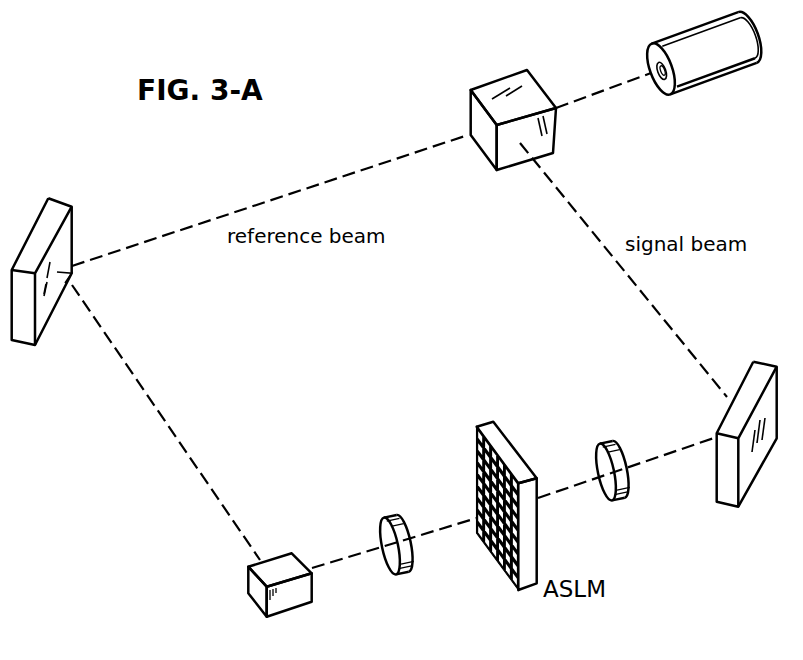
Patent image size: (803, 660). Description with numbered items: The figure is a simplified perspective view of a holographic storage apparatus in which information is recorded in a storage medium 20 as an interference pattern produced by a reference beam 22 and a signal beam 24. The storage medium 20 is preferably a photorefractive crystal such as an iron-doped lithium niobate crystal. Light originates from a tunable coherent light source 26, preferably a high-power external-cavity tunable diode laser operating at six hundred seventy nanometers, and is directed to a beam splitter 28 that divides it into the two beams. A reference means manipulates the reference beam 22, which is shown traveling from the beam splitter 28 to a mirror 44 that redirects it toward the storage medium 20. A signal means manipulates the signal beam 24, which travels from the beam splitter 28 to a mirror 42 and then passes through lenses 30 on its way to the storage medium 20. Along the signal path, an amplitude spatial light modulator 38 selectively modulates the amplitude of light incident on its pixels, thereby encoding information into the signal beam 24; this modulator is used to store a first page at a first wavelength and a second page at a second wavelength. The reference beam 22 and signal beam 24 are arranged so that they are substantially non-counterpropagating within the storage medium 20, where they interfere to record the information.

The storage medium 20 is at (270, 558).
The reference beam 22 is at (303, 190).
The signal beam 24 is at (633, 280).
The tunable coherent light source 26 is at (712, 85).
The beam splitter 28 is at (502, 77).
The lenses 30 is at (387, 515).
The amplitude spatial light modulator (ASLM) 38 is at (487, 425).
The mirror 42 is at (765, 362).
The mirror 44 is at (60, 198).